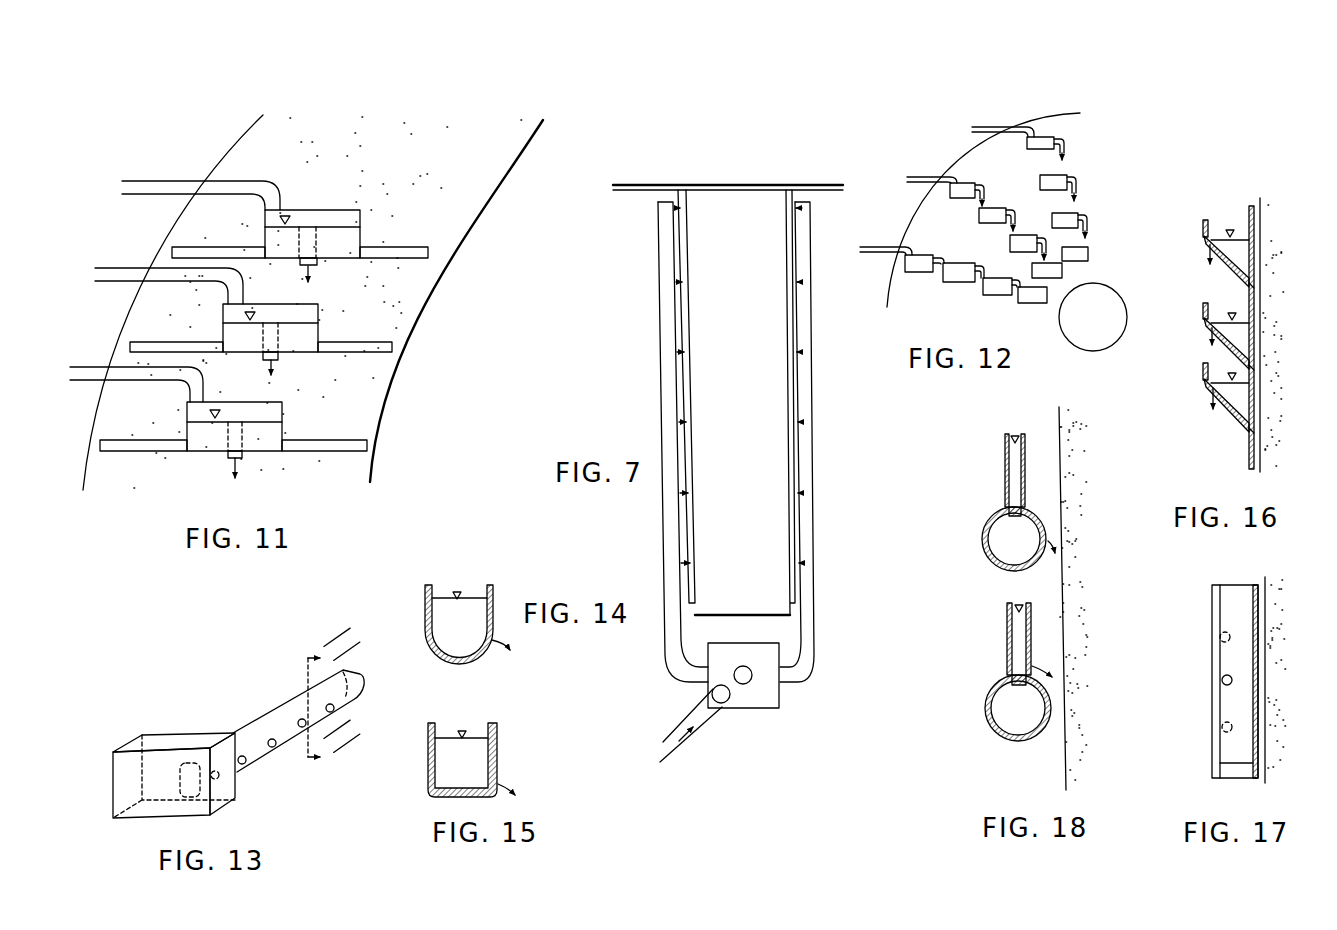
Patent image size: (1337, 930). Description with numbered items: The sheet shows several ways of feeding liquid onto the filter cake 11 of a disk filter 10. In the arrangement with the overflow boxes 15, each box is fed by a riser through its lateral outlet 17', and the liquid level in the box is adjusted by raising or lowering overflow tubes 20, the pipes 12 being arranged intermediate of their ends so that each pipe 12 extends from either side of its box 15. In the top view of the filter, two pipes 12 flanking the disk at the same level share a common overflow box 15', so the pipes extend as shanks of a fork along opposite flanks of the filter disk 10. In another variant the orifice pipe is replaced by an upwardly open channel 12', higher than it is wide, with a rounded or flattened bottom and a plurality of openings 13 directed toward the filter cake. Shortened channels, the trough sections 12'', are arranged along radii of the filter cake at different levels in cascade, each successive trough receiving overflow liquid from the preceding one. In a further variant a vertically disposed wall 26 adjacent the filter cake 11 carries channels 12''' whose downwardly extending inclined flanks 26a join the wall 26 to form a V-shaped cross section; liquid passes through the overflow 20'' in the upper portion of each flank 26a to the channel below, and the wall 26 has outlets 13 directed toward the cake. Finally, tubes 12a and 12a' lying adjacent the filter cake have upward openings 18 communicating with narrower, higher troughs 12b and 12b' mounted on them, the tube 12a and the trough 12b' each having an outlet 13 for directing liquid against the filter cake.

In FIG. 7, the disk filter 10 is at (713, 336).
In FIG. 11, the filter cake 11 is at (404, 303).
In FIG. 12, the filter cake 11 is at (978, 163).
In FIG. 16, the filter cake 11 is at (1266, 289).
In FIG. 17, the filter cake 11 is at (1266, 622).
In FIG. 18, the filter cake 11 is at (1065, 772).
In FIG. 11, the pipes 12 is at (266, 331).
In FIG. 7, the pipes 12 is at (736, 442).
In FIG. 13, the upwardly open channel 12' is at (315, 700).
In FIG. 14, the upwardly open channel 12' is at (459, 640).
In FIG. 15, the upwardly open channel 12' is at (491, 744).
In FIG. 12, the trough sections 12'' is at (974, 215).
In FIG. 16, the channels 12''' is at (1201, 294).
In FIG. 17, the channels 12''' is at (1205, 681).
In FIG. 18, the tube 12a is at (992, 531).
In FIG. 18, the tube 12a' is at (992, 700).
In FIG. 18, the trough 12b is at (988, 465).
In FIG. 18, the trough 12b' is at (989, 639).
In FIG. 16, the openings 13 is at (1256, 415).
In FIG. 18, the openings 13 is at (1044, 540).
In FIG. 13, the openings 13 is at (272, 747).
In FIG. 14, the openings 13 is at (487, 640).
In FIG. 15, the openings 13 is at (488, 783).
In FIG. 11, the overflow boxes 15 is at (298, 311).
In FIG. 13, the overflow boxes 15 is at (174, 753).
In FIG. 7, the common overflow box 15' is at (752, 702).
In FIG. 11, the lateral outlet 17' is at (201, 175).
In FIG. 18, the upward openings 18 is at (1011, 507).
In FIG. 11, the overflow tubes 20 is at (272, 352).
In FIG. 16, the overflow 20'' is at (1186, 327).
In FIG. 17, the overflow 20'' is at (1194, 682).
In FIG. 16, the wall 26 is at (1249, 457).
In FIG. 17, the wall 26 is at (1220, 760).
In FIG. 16, the inclined flanks 26a is at (1232, 410).